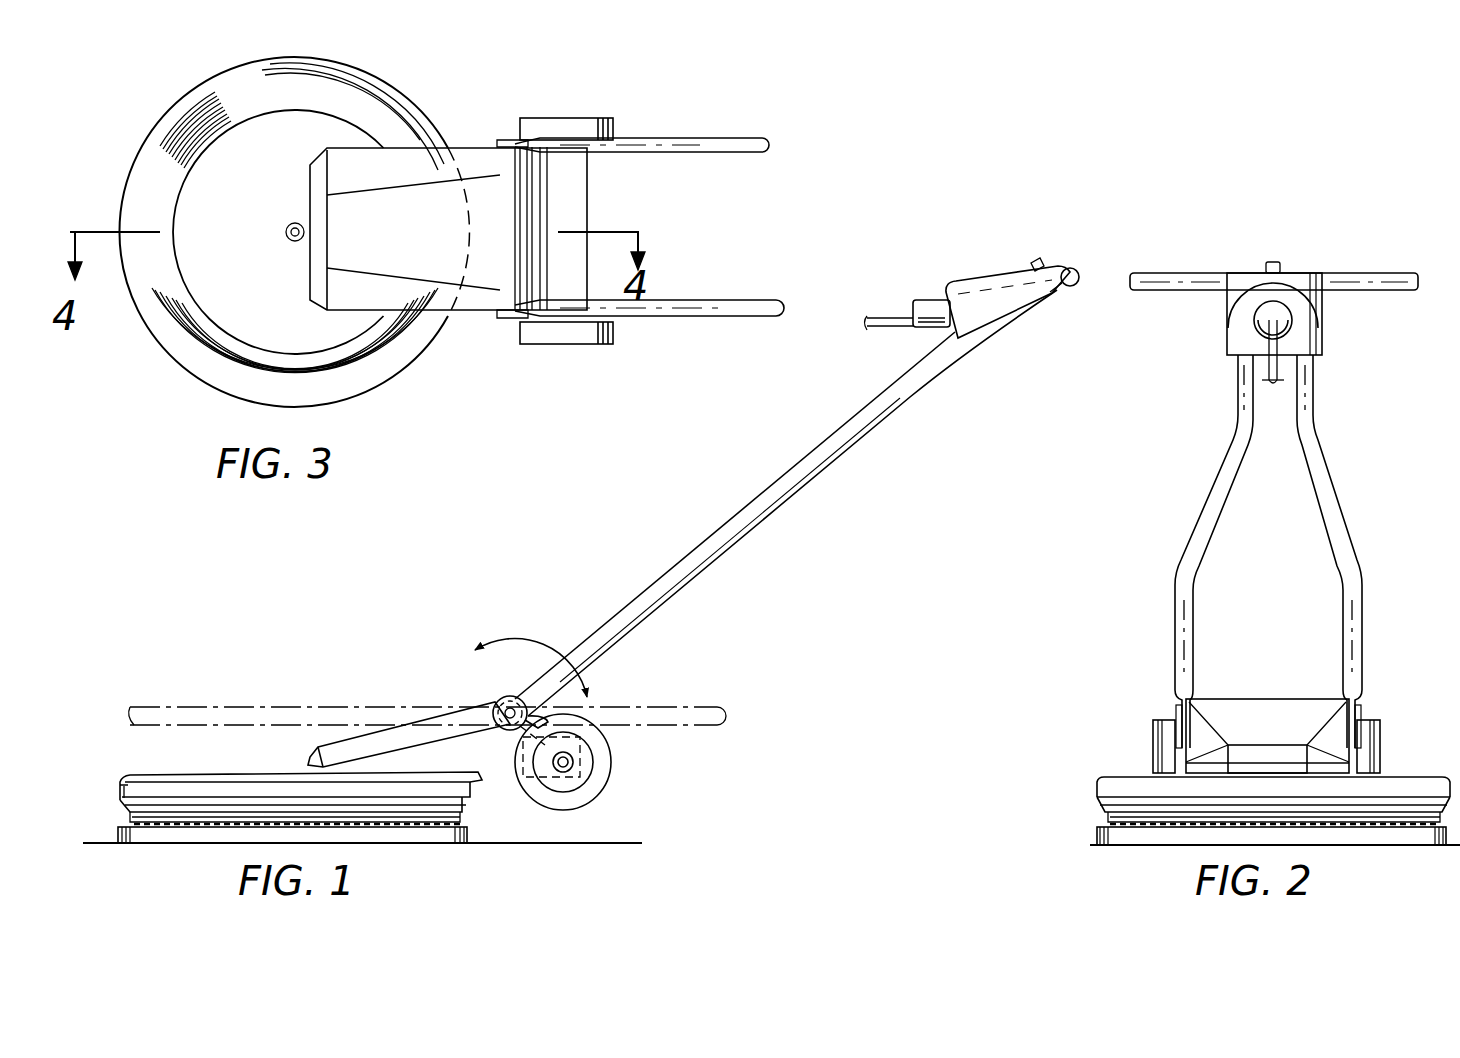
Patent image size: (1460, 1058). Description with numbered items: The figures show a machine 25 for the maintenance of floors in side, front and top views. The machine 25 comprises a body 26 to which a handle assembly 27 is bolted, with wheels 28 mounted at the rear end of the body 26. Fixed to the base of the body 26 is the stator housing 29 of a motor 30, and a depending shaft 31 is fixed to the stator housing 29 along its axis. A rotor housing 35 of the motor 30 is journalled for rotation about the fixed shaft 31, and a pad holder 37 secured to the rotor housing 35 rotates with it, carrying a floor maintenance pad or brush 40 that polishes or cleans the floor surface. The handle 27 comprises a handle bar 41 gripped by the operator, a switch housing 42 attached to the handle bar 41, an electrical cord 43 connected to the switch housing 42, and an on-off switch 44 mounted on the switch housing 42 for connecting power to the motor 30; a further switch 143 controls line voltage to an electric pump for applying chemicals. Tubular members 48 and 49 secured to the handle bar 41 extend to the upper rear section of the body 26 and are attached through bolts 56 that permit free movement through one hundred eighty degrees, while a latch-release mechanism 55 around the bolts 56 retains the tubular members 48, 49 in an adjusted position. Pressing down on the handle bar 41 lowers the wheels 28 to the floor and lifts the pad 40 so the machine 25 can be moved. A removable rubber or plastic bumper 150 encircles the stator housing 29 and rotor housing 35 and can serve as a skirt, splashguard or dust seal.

In FIG. 3, the machine 25 is at (388, 74).
In FIG. 1, the machine 25 is at (392, 672).
In FIG. 2, the machine 25 is at (1262, 676).
In FIG. 3, the body 26 is at (414, 242).
In FIG. 1, the body 26 is at (480, 760).
In FIG. 2, the body 26 is at (1291, 700).
In FIG. 3, the handle assembly 27 is at (697, 320).
In FIG. 1, the handle assembly 27 is at (737, 540).
In FIG. 2, the handle assembly 27 is at (1330, 460).
In FIG. 3, the wheels 28 is at (567, 118).
In FIG. 1, the wheels 28 is at (612, 760).
In FIG. 2, the wheels 28 is at (1152, 738).
In FIG. 1, the stator housing 29 is at (282, 770).
In FIG. 2, the stator housing 29 is at (1384, 777).
In FIG. 3, the motor 30 is at (243, 245).
In FIG. 1, the motor 30 is at (178, 765).
In FIG. 2, the motor 30 is at (1094, 782).
In FIG. 3, the depending shaft 31 is at (291, 222).
In FIG. 1, the rotor housing 35 is at (460, 815).
In FIG. 2, the rotor housing 35 is at (1100, 815).
In FIG. 1, the pad holder 37 is at (122, 822).
In FIG. 2, the pad holder 37 is at (1102, 828).
In FIG. 1, the floor maintenance pad or brush 40 is at (403, 845).
In FIG. 2, the floor maintenance pad or brush 40 is at (1172, 845).
In FIG. 1, the handle bar 41 is at (1080, 285).
In FIG. 2, the handle bar 41 is at (1362, 273).
In FIG. 1, the switch housing 42 is at (978, 276).
In FIG. 2, the switch housing 42 is at (1323, 297).
In FIG. 1, the electrical cord 43 is at (886, 318).
In FIG. 2, the electrical cord 43 is at (1266, 366).
In FIG. 1, the electrical on-off switch 44 is at (1030, 312).
In FIG. 3, the tubular member 48 is at (684, 136).
In FIG. 2, the tubular member 48 is at (1196, 520).
In FIG. 3, the tubular member 49 is at (716, 298).
In FIG. 1, the tubular member 49 is at (232, 705).
In FIG. 2, the tubular member 49 is at (1344, 520).
In FIG. 1, the latch-release mechanism 55 is at (502, 700).
In FIG. 1, the bolts 56 is at (512, 700).
In FIG. 1, the switch 143 is at (1042, 262).
In FIG. 2, the switch 143 is at (1279, 262).
In FIG. 3, the bumper 150 is at (163, 347).
In FIG. 1, the bumper 150 is at (121, 790).